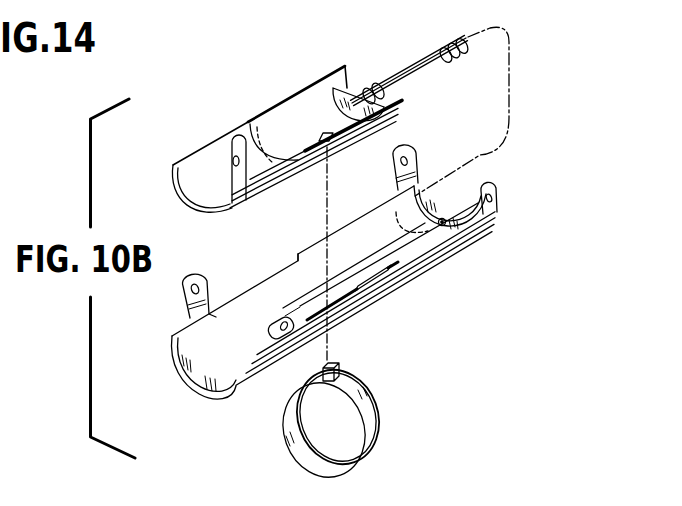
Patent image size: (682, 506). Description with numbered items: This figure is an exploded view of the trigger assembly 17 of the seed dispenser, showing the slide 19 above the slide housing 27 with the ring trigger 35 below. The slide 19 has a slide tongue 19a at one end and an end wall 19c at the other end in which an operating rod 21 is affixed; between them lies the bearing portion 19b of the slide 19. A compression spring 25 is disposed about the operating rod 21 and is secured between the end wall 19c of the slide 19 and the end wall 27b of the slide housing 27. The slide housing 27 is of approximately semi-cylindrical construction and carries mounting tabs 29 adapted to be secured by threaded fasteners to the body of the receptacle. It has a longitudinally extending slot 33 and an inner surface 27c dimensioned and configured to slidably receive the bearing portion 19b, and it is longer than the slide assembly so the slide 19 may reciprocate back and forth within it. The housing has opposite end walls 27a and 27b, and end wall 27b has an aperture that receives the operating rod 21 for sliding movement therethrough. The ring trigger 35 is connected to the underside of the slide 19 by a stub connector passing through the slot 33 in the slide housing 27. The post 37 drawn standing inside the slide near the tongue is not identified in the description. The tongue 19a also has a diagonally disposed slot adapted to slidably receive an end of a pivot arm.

The trigger assembly 17 is at (297, 92).
The slide 19 is at (312, 170).
The slide tongue 19a is at (204, 164).
The bearing portion 19b is at (372, 117).
The end wall 19c is at (333, 98).
The operating rod 21 is at (464, 42).
The compression spring 25 is at (376, 88).
The slide housing 27 is at (383, 297).
The end wall 27a is at (197, 381).
The end wall 27b is at (481, 187).
The inner surface 27c is at (300, 289).
The mounting tabs 29 is at (188, 291).
The slot 33 is at (373, 270).
The ring trigger 35 is at (292, 417).
The post 37 is at (238, 163).